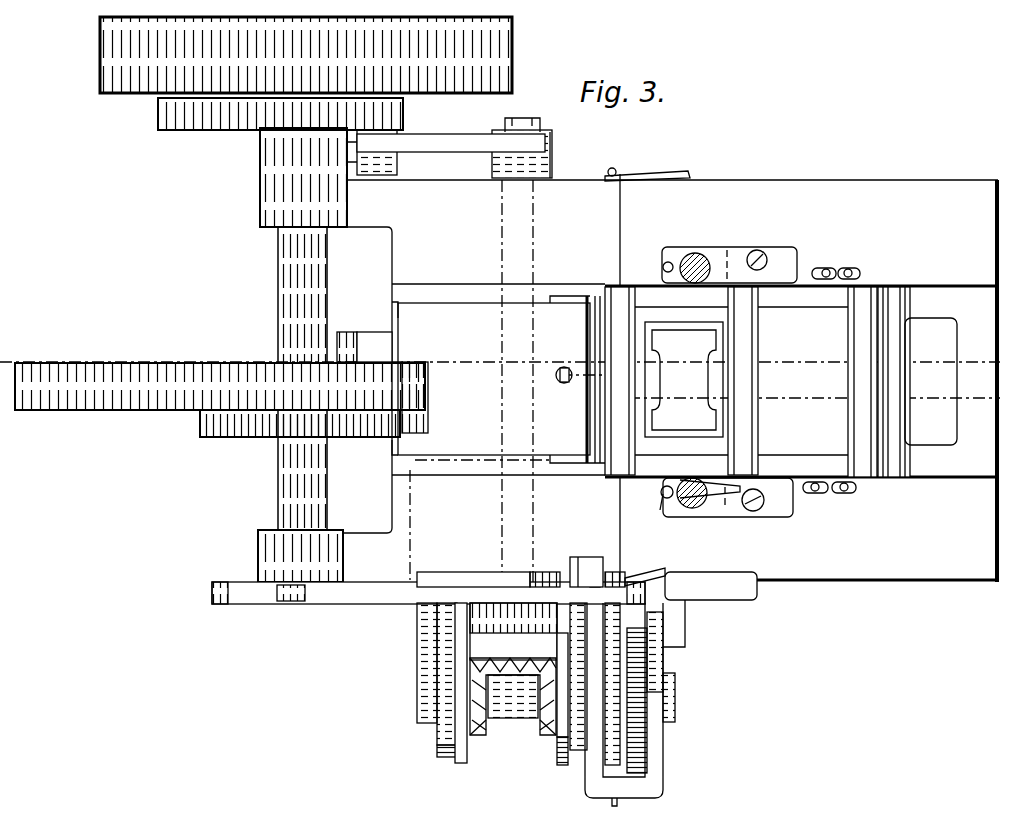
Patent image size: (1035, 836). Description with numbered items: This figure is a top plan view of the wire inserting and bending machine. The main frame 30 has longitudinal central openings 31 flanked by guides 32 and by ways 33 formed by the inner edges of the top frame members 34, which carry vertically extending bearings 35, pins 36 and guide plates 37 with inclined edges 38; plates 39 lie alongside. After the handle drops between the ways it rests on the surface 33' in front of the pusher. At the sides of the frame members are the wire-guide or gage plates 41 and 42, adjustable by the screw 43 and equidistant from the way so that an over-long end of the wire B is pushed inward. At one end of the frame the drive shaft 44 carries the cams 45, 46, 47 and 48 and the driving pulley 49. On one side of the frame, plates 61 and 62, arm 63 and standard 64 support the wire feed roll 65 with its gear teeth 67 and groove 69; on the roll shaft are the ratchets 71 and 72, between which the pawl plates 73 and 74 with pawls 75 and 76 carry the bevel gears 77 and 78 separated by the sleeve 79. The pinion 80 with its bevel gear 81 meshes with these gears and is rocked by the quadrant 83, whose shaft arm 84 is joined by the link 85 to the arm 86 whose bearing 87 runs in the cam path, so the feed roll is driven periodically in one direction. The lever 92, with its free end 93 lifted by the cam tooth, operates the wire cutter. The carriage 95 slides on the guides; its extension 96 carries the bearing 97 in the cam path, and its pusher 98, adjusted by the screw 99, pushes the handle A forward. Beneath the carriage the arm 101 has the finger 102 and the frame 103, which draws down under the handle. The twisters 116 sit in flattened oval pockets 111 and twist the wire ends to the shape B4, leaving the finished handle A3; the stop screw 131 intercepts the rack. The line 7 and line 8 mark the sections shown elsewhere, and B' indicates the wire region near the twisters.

The main frame 30 is at (392, 510).
The longitudinal central openings 31 is at (958, 410).
The guides 32 is at (393, 302).
The ways 33 is at (695, 385).
The surface 33' is at (788, 381).
The top frame members 34 is at (865, 180).
The vertically extending bearings 35 is at (690, 254).
The pins 36 is at (665, 262).
The guide plates 37 is at (757, 250).
The inclined edges 38 is at (727, 252).
The plate 39 is at (778, 258).
The wire-guide or gage plate 41 is at (652, 575).
The wire-guide or gage plate 42 is at (666, 176).
The screw 43 is at (615, 170).
The drive shaft 44 is at (282, 478).
The cam 45 is at (229, 603).
The cam 46 is at (250, 437).
The cam 47 is at (207, 364).
The cam 48 is at (196, 130).
The driving pulley 49 is at (101, 60).
The plate 61 is at (665, 660).
The plate 62 is at (590, 778).
The arm 63 is at (417, 652).
The standard 64 is at (530, 575).
The wire feed roll 65 is at (645, 752).
The gear teeth 67 is at (640, 722).
The groove 69 is at (616, 690).
The ratchet 71 is at (580, 752).
The ratchet 72 is at (437, 728).
The pawl plate 73 is at (560, 766).
The pawl plate 74 is at (462, 765).
The pawl 75 is at (588, 668).
The pawl 76 is at (445, 758).
The bevel gear 77 is at (553, 736).
The bevel gear 78 is at (472, 735).
The sleeve 79 is at (516, 720).
The pinion 80 is at (512, 631).
The bevel gear 81 is at (556, 662).
The quadrant 83 is at (428, 593).
The arm 84 is at (554, 165).
The link 85 is at (462, 140).
The arm 86 is at (400, 137).
The bearing 87 is at (400, 168).
The lever 92 is at (500, 580).
The free end 93 is at (300, 604).
The carriage 95 is at (455, 312).
The extension 96 is at (362, 333).
The bearing 97 is at (346, 332).
The pusher 98 is at (598, 332).
The screw 99 is at (560, 389).
The arm 101 is at (648, 390).
The finger 102 is at (428, 388).
The frame 103 is at (697, 437).
The pockets 111 is at (696, 280).
The twisters 116 is at (664, 269).
The stop screw 131 is at (946, 386).
The section line 7 is at (1015, 382).
The section line 8 is at (1015, 416).
The handle A is at (607, 287).
The finished handle A3 is at (758, 388).
The wire B is at (608, 387).
The link B' is at (836, 264).
The twisted wire ends B4 is at (829, 498).